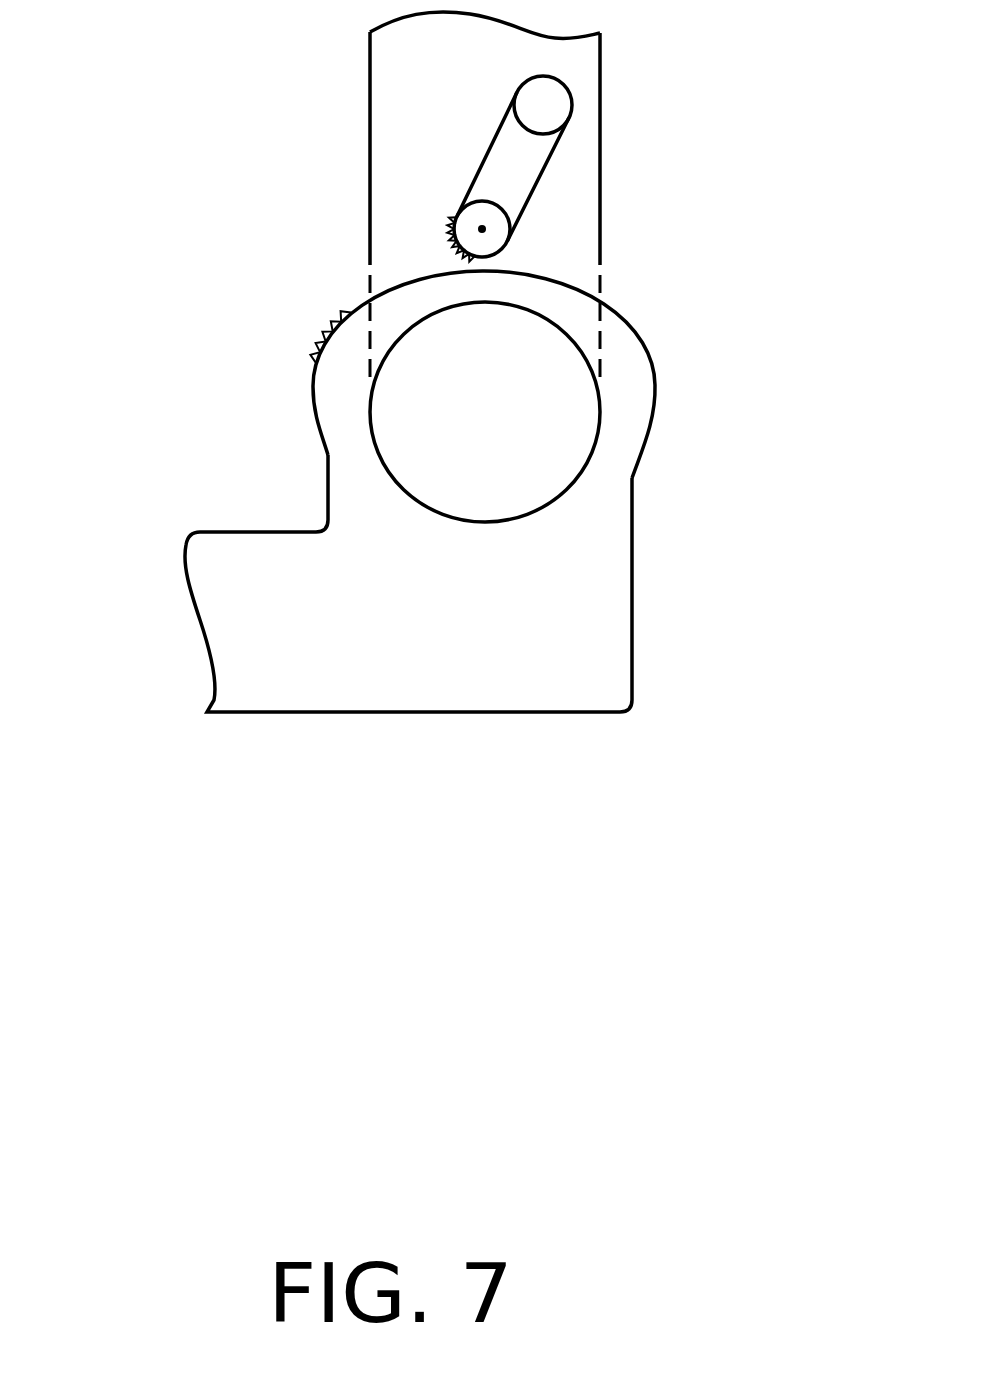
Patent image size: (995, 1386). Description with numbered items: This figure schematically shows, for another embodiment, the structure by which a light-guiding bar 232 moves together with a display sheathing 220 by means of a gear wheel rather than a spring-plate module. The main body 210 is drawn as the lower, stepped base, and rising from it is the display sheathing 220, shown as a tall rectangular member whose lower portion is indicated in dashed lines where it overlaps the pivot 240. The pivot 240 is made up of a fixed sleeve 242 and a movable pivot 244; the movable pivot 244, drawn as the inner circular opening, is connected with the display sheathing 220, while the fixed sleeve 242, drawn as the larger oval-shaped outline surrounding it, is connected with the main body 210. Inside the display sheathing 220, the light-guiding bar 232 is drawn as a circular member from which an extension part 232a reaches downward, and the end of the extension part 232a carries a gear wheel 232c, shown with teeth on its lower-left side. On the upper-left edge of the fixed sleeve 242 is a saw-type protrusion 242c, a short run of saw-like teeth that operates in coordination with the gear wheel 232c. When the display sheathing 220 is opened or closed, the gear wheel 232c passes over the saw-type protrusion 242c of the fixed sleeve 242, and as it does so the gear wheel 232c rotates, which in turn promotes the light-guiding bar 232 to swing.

The main body 210 is at (210, 558).
The display sheathing 220 is at (392, 83).
The light-guiding bar 232 is at (548, 95).
The extension part 232a is at (517, 167).
The gear wheel 232c is at (497, 225).
The pivot 240 is at (525, 378).
The fixed sleeve 242 is at (474, 356).
The saw-type protrusion 242c is at (318, 313).
The movable pivot 244 is at (565, 432).